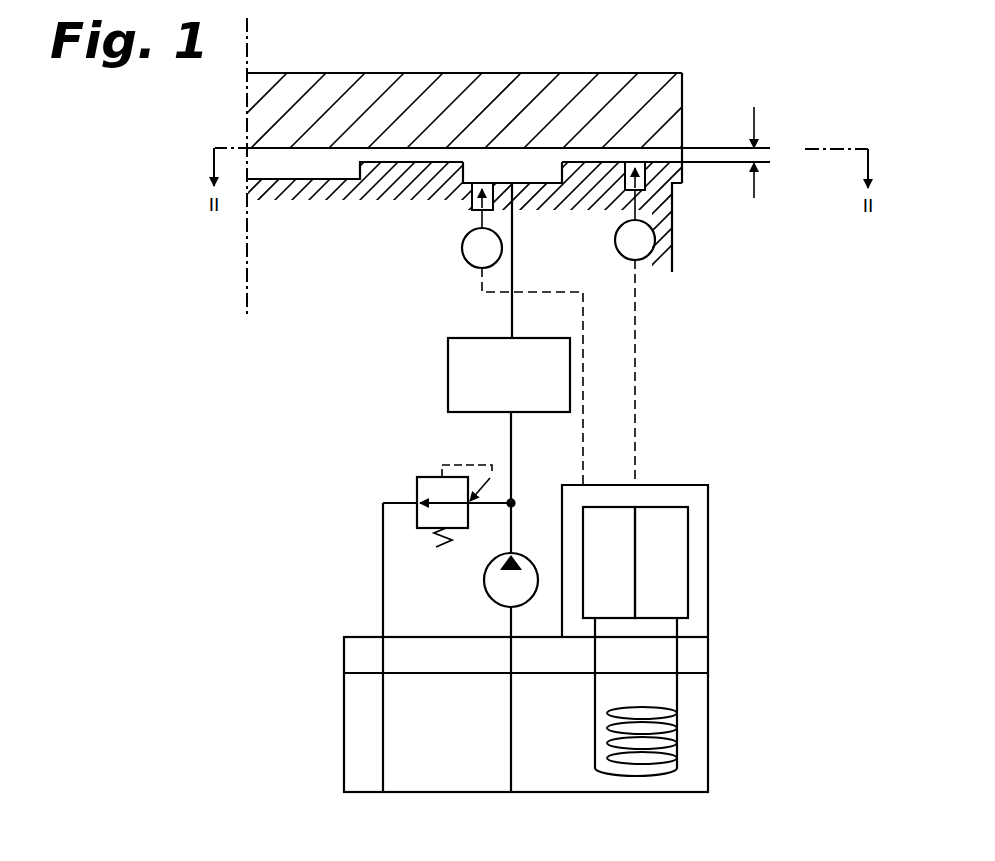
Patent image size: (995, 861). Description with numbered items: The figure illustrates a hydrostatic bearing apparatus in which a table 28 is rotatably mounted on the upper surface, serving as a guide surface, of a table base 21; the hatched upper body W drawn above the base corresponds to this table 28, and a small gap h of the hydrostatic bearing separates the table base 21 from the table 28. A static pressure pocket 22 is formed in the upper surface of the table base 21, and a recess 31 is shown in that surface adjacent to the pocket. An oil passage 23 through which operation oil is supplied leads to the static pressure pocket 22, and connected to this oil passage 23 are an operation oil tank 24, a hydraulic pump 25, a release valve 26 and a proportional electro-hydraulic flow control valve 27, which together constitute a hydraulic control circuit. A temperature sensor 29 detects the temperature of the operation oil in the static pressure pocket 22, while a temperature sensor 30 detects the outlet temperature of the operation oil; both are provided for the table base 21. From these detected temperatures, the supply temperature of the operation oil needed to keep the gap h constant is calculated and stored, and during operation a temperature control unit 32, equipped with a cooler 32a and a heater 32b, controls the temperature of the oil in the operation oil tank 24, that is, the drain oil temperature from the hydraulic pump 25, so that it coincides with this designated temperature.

The semiconductor wafer W is at (566, 88).
The table base 21 is at (683, 186).
The static pressure pocket 22 is at (512, 170).
The oil passage 23 is at (511, 318).
The operation oil tank 24 is at (354, 710).
The hydraulic pump 25 is at (484, 581).
The release valve 26 is at (428, 477).
The proportional electro-hydraulic flow control valve 27 is at (448, 372).
The table 28 is at (674, 95).
The temperature sensor 29 is at (472, 205).
The temperature sensor 30 is at (624, 203).
The recess in hot plate surface 31 is at (550, 184).
The temperature control unit 32 is at (698, 485).
The cooler 32a is at (602, 507).
The heater 32b is at (658, 507).
The gap h is at (770, 152).